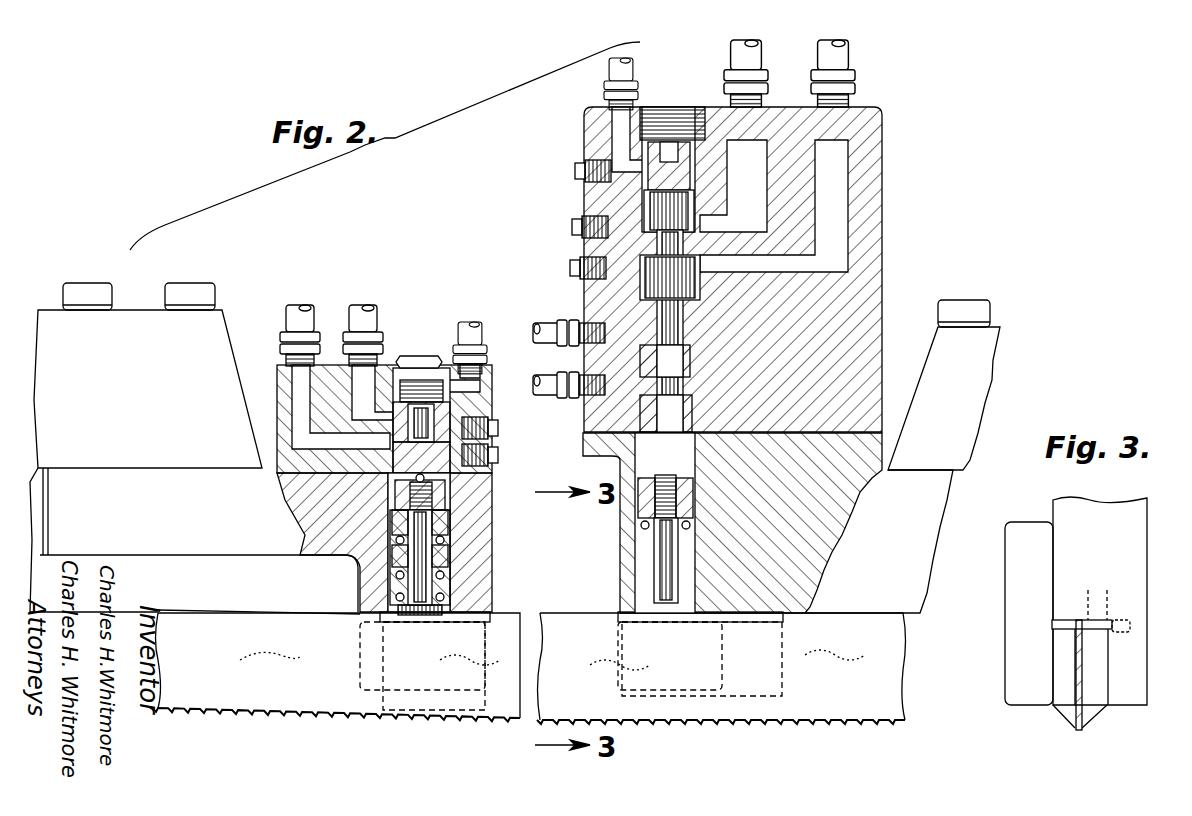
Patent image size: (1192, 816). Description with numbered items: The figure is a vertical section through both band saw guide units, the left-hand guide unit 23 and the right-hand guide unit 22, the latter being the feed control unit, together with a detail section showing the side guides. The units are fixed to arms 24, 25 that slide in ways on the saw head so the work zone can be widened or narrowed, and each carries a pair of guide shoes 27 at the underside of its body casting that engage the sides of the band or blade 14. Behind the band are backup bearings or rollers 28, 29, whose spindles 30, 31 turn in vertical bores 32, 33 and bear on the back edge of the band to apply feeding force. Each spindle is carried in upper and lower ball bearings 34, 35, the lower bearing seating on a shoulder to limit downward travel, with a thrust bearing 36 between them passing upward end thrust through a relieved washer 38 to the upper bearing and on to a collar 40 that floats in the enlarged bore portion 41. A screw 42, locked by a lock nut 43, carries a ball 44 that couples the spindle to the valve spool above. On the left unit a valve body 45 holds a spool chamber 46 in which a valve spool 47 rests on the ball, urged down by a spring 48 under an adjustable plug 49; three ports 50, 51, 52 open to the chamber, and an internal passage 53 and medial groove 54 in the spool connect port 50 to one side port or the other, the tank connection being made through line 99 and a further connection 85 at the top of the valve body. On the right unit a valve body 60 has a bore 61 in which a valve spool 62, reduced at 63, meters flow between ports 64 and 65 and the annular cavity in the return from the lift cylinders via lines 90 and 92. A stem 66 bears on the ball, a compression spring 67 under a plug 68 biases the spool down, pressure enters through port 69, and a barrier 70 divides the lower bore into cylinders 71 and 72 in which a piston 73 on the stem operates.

In FIG. 2, the workpiece 14 is at (322, 698).
In FIG. 3, the workpiece 14 is at (1087, 722).
In FIG. 2, the guide unit 22 is at (605, 578).
In FIG. 3, the guide unit 22 is at (1133, 612).
In FIG. 2, the guide unit 23 is at (500, 578).
In FIG. 2, the arm 24 is at (930, 340).
In FIG. 2, the arm 25 is at (132, 325).
In FIG. 2, the guide shoes 27 is at (455, 705).
In FIG. 3, the guide shoes 27 is at (1062, 705).
In FIG. 3, the backup bearing or roller 28 is at (1084, 611).
In FIG. 2, the backup bearing or roller 29 is at (448, 600).
In FIG. 2, the spindle 30 is at (680, 570).
In FIG. 2, the spindle 31 is at (408, 560).
In FIG. 2, the vertical bore 32 is at (640, 540).
In FIG. 2, the vertical bore 33 is at (448, 540).
In FIG. 2, the upper ball bearing 34 is at (448, 524).
In FIG. 2, the lower ball bearing 35 is at (400, 592).
In FIG. 2, the thrust bearing 36 is at (400, 575).
In FIG. 2, the washer 38 is at (448, 556).
In FIG. 2, the collar 40 is at (452, 500).
In FIG. 2, the upper enlarged portion of bore 41 is at (452, 492).
In FIG. 2, the screw 42 is at (695, 496).
In FIG. 2, the lock nut 43 is at (412, 492).
In FIG. 2, the ball 44 is at (440, 488).
In FIG. 2, the valve body 45 is at (492, 385).
In FIG. 2, the valve spool chamber 46 is at (445, 420).
In FIG. 2, the valve spool 47 is at (493, 432).
In FIG. 2, the spring 48 is at (430, 385).
In FIG. 2, the plug 49 is at (418, 365).
In FIG. 2, the port 50 is at (470, 382).
In FIG. 2, the port 51 is at (385, 426).
In FIG. 2, the port 52 is at (385, 470).
In FIG. 2, the internal passage 53 is at (470, 330).
In FIG. 2, the groove 54 is at (494, 460).
In FIG. 2, the valve body 60 is at (584, 192).
In FIG. 2, the vertical bore 61 is at (655, 300).
In FIG. 2, the valve spool 62 is at (640, 270).
In FIG. 2, the reduced medial portion 63 is at (645, 220).
In FIG. 2, the port 64 is at (708, 265).
In FIG. 2, the port 65 is at (708, 228).
In FIG. 2, the stem 66 is at (660, 330).
In FIG. 2, the compression spring 67 is at (690, 175).
In FIG. 2, the plug 68 is at (668, 115).
In FIG. 2, the port 69 is at (610, 165).
In FIG. 2, the barrier 70 is at (655, 350).
In FIG. 2, the upper cylinder 71 is at (657, 334).
In FIG. 2, the lower cylinder 72 is at (648, 388).
In FIG. 2, the piston 73 is at (650, 402).
In FIG. 2, the conduit 85 is at (358, 318).
In FIG. 2, the line 90 is at (858, 52).
In FIG. 2, the line 92 is at (770, 52).
In FIG. 2, the line 99 is at (290, 318).